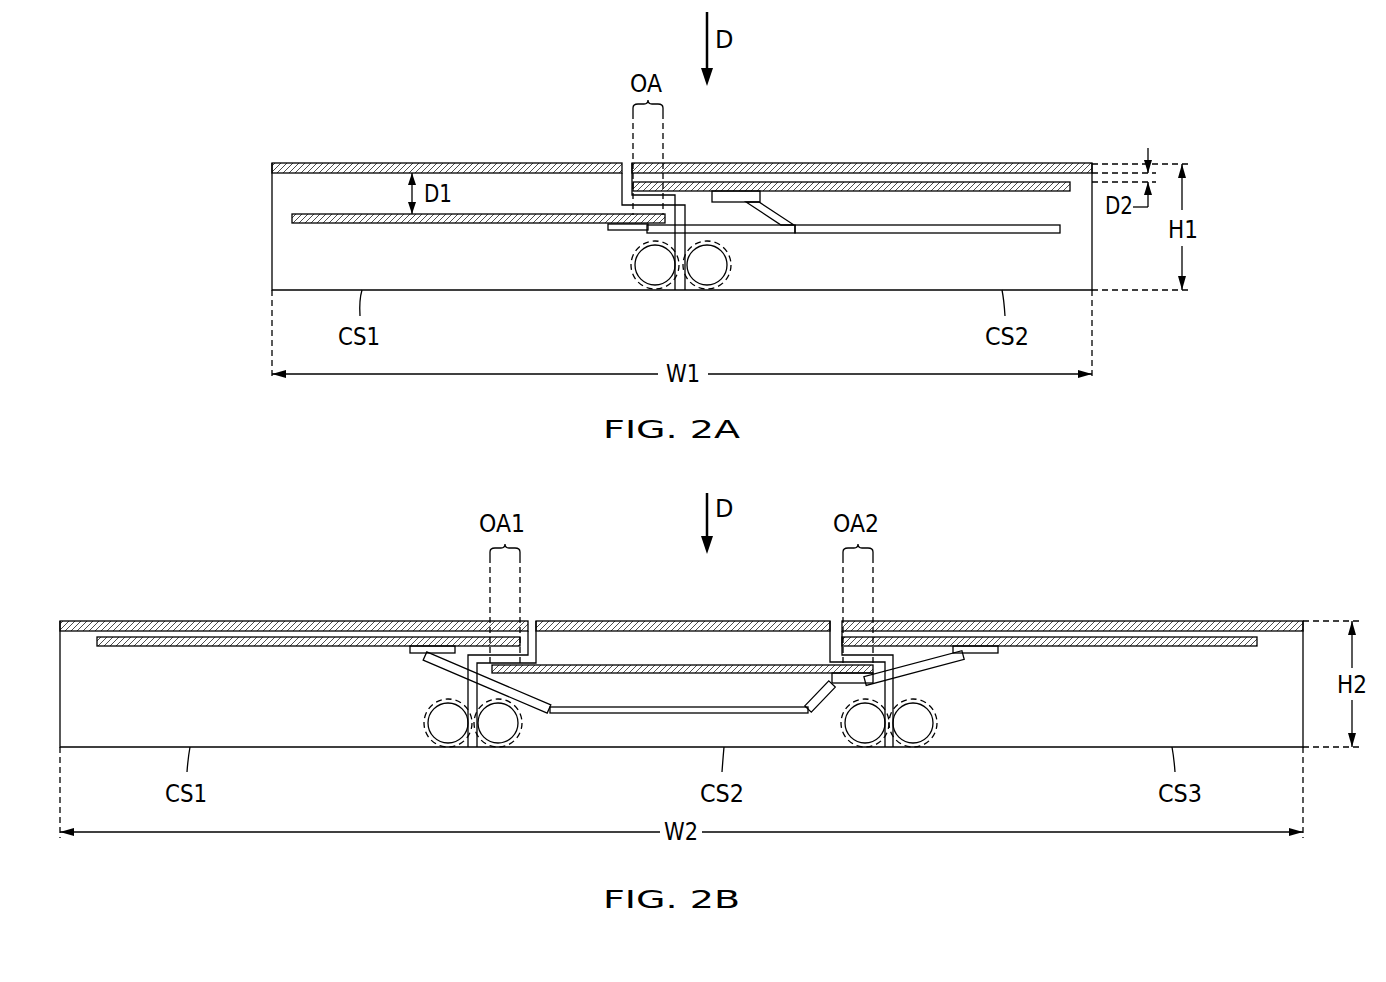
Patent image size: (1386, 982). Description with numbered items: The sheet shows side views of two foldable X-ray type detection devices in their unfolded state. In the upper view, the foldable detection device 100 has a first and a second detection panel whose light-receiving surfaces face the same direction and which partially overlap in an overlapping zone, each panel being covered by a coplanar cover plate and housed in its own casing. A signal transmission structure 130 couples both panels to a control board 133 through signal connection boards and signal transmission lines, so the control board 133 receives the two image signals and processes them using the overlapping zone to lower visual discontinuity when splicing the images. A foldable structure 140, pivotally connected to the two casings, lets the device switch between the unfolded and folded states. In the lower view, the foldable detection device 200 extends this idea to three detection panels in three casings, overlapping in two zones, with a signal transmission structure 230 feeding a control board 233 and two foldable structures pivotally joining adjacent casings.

In FIG. 2A, the foldable detection device 100 is at (1171, 352).
In FIG. 2A, the signal transmission structure 130 is at (143, 30).
In FIG. 2A, the control board 133 is at (872, 232).
In FIG. 2A, the foldable structure 140 is at (731, 289).
In FIG. 2B, the foldable detection device 200 is at (1371, 838).
In FIG. 2B, the signal transmission structure 230 is at (88, 368).
In FIG. 2B, the control board 233 is at (633, 713).